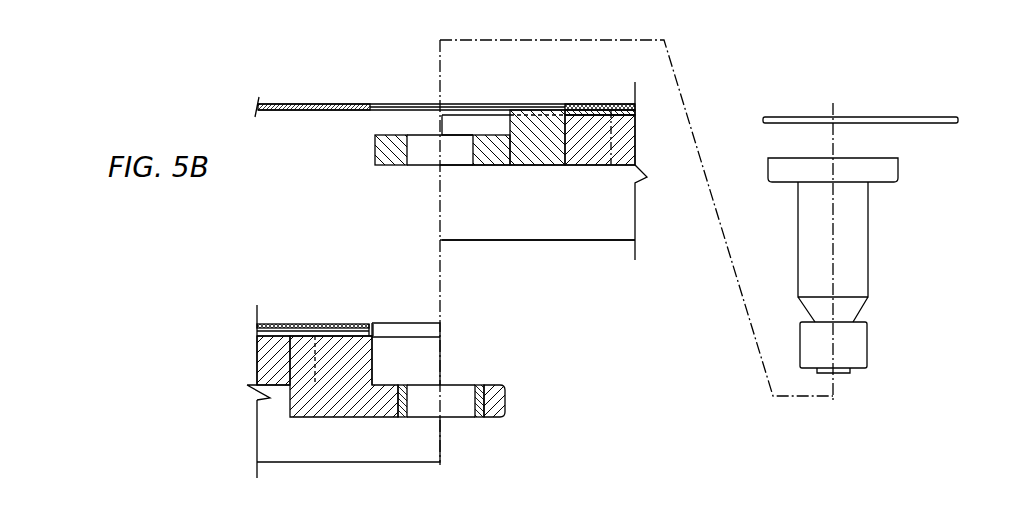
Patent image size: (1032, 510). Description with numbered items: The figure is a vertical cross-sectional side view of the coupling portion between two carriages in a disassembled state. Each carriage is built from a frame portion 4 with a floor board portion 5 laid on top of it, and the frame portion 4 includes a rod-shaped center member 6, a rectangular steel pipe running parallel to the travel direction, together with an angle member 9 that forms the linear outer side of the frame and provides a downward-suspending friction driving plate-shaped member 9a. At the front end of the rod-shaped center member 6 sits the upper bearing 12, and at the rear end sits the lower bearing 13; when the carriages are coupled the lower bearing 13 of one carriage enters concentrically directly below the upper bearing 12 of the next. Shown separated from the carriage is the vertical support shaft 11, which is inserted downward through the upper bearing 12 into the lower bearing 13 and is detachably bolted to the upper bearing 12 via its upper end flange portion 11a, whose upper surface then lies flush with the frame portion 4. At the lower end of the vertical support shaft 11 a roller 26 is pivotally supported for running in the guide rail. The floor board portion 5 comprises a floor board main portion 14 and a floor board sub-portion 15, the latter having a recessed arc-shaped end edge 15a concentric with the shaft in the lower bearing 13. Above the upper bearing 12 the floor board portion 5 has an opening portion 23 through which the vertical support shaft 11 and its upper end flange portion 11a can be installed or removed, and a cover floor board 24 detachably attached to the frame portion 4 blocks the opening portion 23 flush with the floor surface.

The frame portion 4 is at (612, 104).
The floor board portion 5 is at (322, 102).
The rod-shaped center member 6 is at (597, 157).
The angle member 9 is at (580, 104).
The friction driving plate-shaped member 9a is at (551, 217).
The vertical support shaft 11 is at (855, 247).
The upper end flange portion 11a is at (890, 170).
The upper bearing 12 is at (375, 149).
The lower bearing 13 is at (507, 403).
The floor board main portion 14 is at (285, 106).
The floor board sub-portion 15 is at (319, 289).
The recessed arc-shaped end edge 15a is at (338, 336).
The opening portion 23 is at (422, 105).
The cover floor board 24 is at (870, 117).
The roller 26 is at (858, 350).